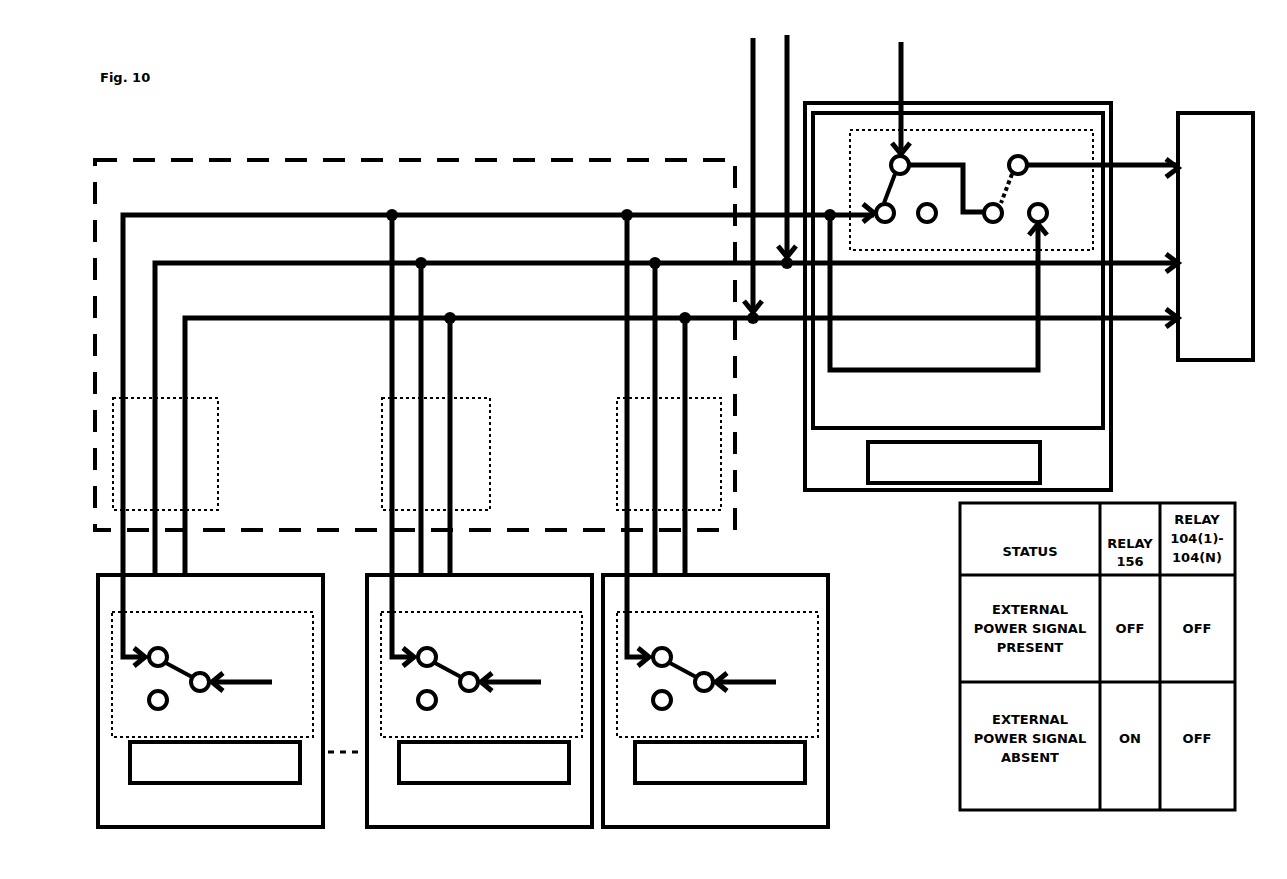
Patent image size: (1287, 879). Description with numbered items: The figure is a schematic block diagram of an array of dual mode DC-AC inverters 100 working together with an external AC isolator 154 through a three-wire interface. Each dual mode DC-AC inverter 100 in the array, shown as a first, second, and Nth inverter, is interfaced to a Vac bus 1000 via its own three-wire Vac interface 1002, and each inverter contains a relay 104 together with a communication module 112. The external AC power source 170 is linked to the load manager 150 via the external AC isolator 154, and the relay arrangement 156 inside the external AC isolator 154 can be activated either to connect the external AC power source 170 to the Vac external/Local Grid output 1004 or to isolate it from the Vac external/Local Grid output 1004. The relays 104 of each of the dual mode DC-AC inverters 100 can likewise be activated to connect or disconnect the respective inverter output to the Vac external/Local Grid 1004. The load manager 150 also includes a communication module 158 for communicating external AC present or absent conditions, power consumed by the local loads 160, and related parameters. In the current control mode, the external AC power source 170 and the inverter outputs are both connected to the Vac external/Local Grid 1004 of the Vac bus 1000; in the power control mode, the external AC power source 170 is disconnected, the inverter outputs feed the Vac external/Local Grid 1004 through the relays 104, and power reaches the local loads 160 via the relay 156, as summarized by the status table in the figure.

The dual mode DC-AC inverter 100 is at (463, 689).
The relay 104 is at (465, 656).
The communication module 112 is at (467, 762).
The load manager 150 is at (1016, 279).
The external AC isolator 154 is at (1020, 248).
The relay subsystem 156 is at (1094, 128).
The communication module 158 is at (954, 462).
The local loads 160 is at (1215, 226).
The external AC power source 170 is at (932, 174).
The Vac bus 1000 is at (636, 349).
The Vac interface 1002 is at (618, 434).
The Vac external/Local Grid output 1004 is at (585, 384).